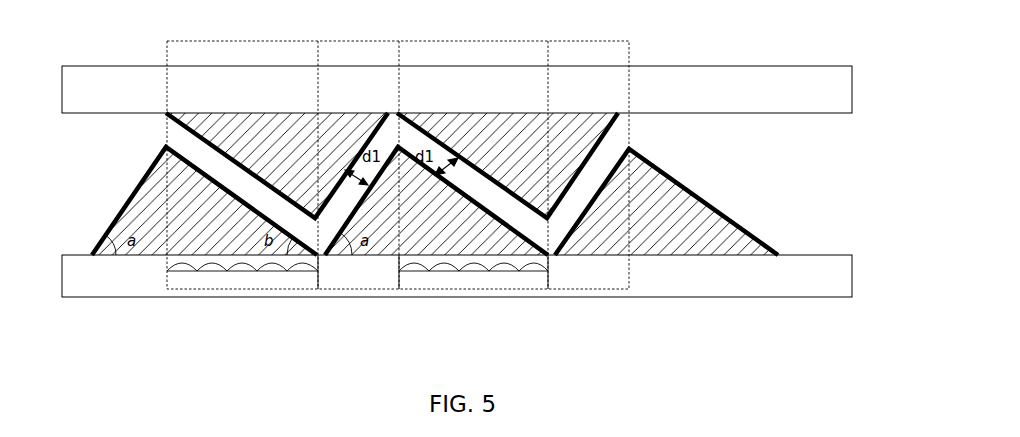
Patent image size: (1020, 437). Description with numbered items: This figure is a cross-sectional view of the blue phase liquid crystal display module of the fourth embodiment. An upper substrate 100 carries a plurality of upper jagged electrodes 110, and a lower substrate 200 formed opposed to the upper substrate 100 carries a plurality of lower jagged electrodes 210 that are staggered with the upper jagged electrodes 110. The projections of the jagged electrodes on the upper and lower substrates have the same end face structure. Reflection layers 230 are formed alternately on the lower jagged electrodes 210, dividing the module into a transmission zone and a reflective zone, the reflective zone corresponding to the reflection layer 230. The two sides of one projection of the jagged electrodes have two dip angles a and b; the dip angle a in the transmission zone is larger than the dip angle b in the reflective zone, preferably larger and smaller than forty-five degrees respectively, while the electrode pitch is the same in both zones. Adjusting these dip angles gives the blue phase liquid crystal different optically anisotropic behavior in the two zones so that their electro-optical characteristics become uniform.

The upper substrate 100 is at (657, 57).
The upper jagged electrodes 110 is at (617, 125).
The lower substrate 200 is at (643, 306).
The lower jagged electrodes 210 is at (733, 215).
The reflection layer 230 is at (442, 268).